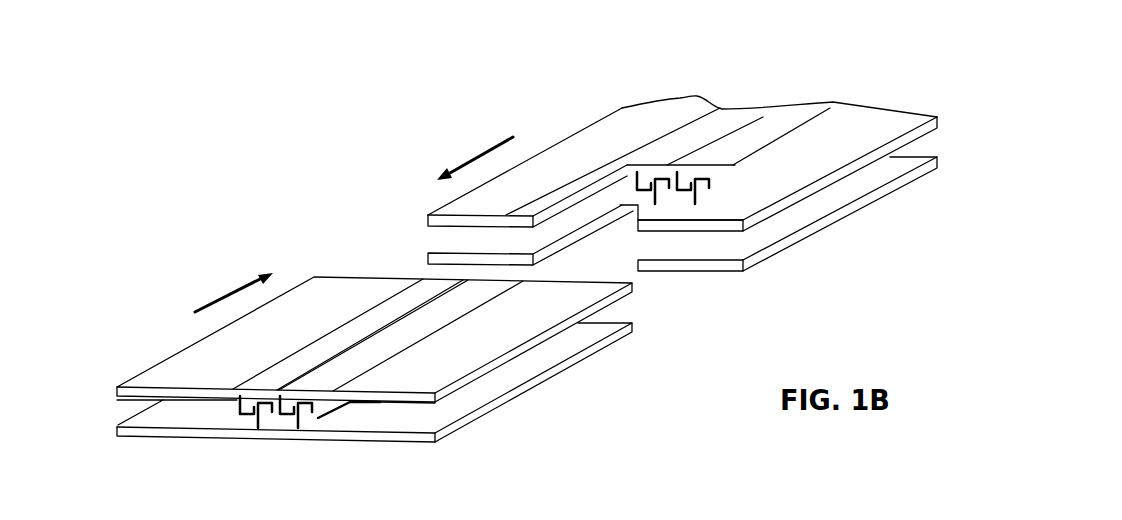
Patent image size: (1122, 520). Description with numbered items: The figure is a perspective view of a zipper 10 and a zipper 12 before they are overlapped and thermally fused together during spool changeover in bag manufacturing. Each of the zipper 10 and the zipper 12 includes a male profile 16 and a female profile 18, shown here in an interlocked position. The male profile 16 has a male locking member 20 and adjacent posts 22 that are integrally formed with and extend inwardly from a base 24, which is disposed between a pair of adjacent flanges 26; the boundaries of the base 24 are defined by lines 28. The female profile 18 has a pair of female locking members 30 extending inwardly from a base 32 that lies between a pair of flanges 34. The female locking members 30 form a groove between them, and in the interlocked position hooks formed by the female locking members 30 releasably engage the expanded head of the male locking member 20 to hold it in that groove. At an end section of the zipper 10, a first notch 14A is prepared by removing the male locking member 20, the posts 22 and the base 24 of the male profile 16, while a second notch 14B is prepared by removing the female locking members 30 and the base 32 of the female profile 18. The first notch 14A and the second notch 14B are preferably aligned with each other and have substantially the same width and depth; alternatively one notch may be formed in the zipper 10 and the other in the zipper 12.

The zipper 10 is at (916, 50).
The zipper 12 is at (612, 391).
The first notch 14A is at (593, 188).
The second notch 14B is at (632, 245).
The male profile 16 is at (312, 277).
The female profile 18 is at (510, 405).
The male locking member 20 is at (276, 424).
The posts 22 is at (243, 426).
The base 24 is at (302, 365).
The flanges 26 is at (330, 290).
The lines 28 is at (720, 108).
The female locking members 30 is at (254, 424).
The base 32 is at (290, 428).
The flanges 34 is at (152, 420).